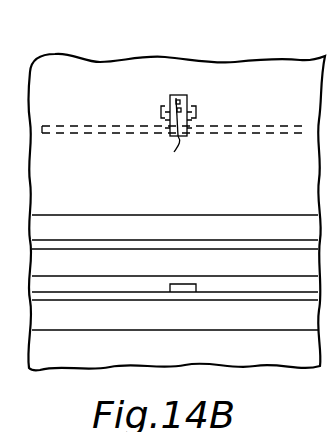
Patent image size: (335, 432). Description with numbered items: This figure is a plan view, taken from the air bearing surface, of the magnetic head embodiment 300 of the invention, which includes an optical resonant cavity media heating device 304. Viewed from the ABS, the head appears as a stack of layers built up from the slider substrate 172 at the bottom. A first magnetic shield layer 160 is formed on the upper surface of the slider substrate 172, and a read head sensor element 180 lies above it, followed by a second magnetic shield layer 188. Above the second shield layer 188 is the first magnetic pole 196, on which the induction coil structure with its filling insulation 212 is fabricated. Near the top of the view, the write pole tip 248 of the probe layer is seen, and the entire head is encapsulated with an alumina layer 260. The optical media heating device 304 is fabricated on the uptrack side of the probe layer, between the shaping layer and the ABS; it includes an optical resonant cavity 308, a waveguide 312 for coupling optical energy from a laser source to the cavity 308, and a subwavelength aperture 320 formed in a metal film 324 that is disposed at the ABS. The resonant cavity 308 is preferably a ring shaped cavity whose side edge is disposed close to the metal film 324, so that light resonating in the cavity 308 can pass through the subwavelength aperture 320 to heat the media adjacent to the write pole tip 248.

The magnetic head embodiment 300 is at (118, 50).
The optical resonant cavity media heating device 304 is at (178, 85).
The alumina layer 260 is at (269, 70).
The metal film 324 is at (168, 112).
The write pole tip 248 is at (184, 95).
The optical resonant cavity 308 is at (215, 102).
The subwavelength aperture 320 is at (156, 156).
The waveguide 312 is at (268, 130).
The filling insulation 212 is at (305, 198).
The first magnetic pole (P1) 196 is at (230, 195).
The read head sensor element 180 is at (181, 284).
The second magnetic shield layer (S2) 188 is at (252, 266).
The first magnetic shield layer (S1) 160 is at (229, 316).
The slider substrate 172 is at (128, 364).